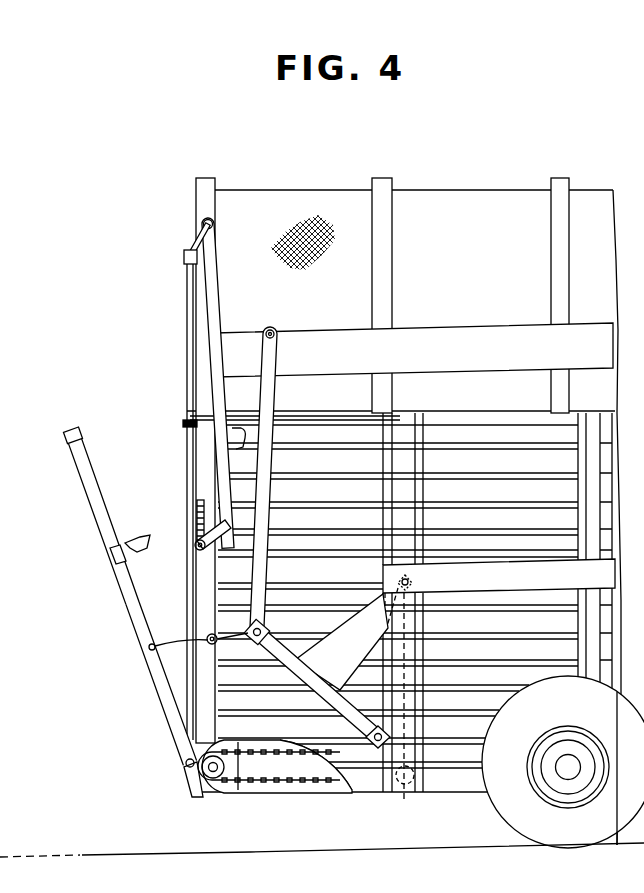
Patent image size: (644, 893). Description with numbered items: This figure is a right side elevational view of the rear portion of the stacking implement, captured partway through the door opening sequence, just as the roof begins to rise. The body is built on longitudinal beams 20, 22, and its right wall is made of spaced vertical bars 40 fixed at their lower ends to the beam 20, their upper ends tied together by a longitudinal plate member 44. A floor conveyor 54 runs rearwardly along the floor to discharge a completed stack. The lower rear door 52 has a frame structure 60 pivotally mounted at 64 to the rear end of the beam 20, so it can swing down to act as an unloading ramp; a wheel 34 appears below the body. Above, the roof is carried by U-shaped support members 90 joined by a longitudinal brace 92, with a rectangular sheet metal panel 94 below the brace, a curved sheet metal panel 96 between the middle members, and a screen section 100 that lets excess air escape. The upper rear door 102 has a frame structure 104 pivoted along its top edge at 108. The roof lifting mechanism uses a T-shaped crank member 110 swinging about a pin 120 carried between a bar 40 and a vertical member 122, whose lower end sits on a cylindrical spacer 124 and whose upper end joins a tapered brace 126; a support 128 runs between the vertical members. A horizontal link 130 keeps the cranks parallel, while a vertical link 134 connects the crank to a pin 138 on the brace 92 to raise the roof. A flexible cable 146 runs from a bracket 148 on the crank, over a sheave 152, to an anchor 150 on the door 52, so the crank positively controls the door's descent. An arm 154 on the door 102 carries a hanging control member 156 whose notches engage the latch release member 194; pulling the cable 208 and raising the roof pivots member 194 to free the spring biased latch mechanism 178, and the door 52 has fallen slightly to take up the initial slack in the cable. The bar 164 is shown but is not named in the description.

The longitudinal beam 20 is at (364, 775).
The longitudinal beam 22 is at (305, 770).
The wheel 34 is at (497, 808).
The vertical bars 40 is at (425, 674).
The longitudinal plate member 44 is at (445, 409).
The rear door 52 is at (127, 602).
The floor conveyor 54 is at (224, 800).
The frame structure 60 is at (178, 716).
The pivot 64 is at (185, 768).
The U-shaped support members 90 is at (376, 176).
The longitudinal brace 92 is at (461, 328).
The rectangular sheet metal panel 94 is at (410, 377).
The curved sheet metal panel 96 is at (470, 195).
The screen section 100 is at (292, 200).
The rear door 102 is at (184, 312).
The frame structure 104 is at (193, 353).
The pivot 108 is at (184, 255).
The T-shaped crank member 110 is at (340, 641).
The pin 120 is at (413, 583).
The vertical member 122 is at (410, 656).
The cylindrical spacer 124 is at (405, 790).
The tapered brace 126 is at (405, 467).
The support 128 is at (527, 568).
The horizontal link 130 is at (460, 735).
The vertical link 134 is at (276, 361).
The pin 138 is at (276, 330).
The flexible cable 146 is at (278, 673).
The bracket 148 is at (368, 740).
The anchor 150 is at (149, 648).
The sheave 152 is at (209, 645).
The arm 154 is at (196, 244).
The control member 156 is at (217, 310).
The slide bar 164 is at (240, 406).
The latch mechanism 178 is at (130, 532).
The latch release member 194 is at (206, 556).
The flexible cable 208 is at (246, 459).